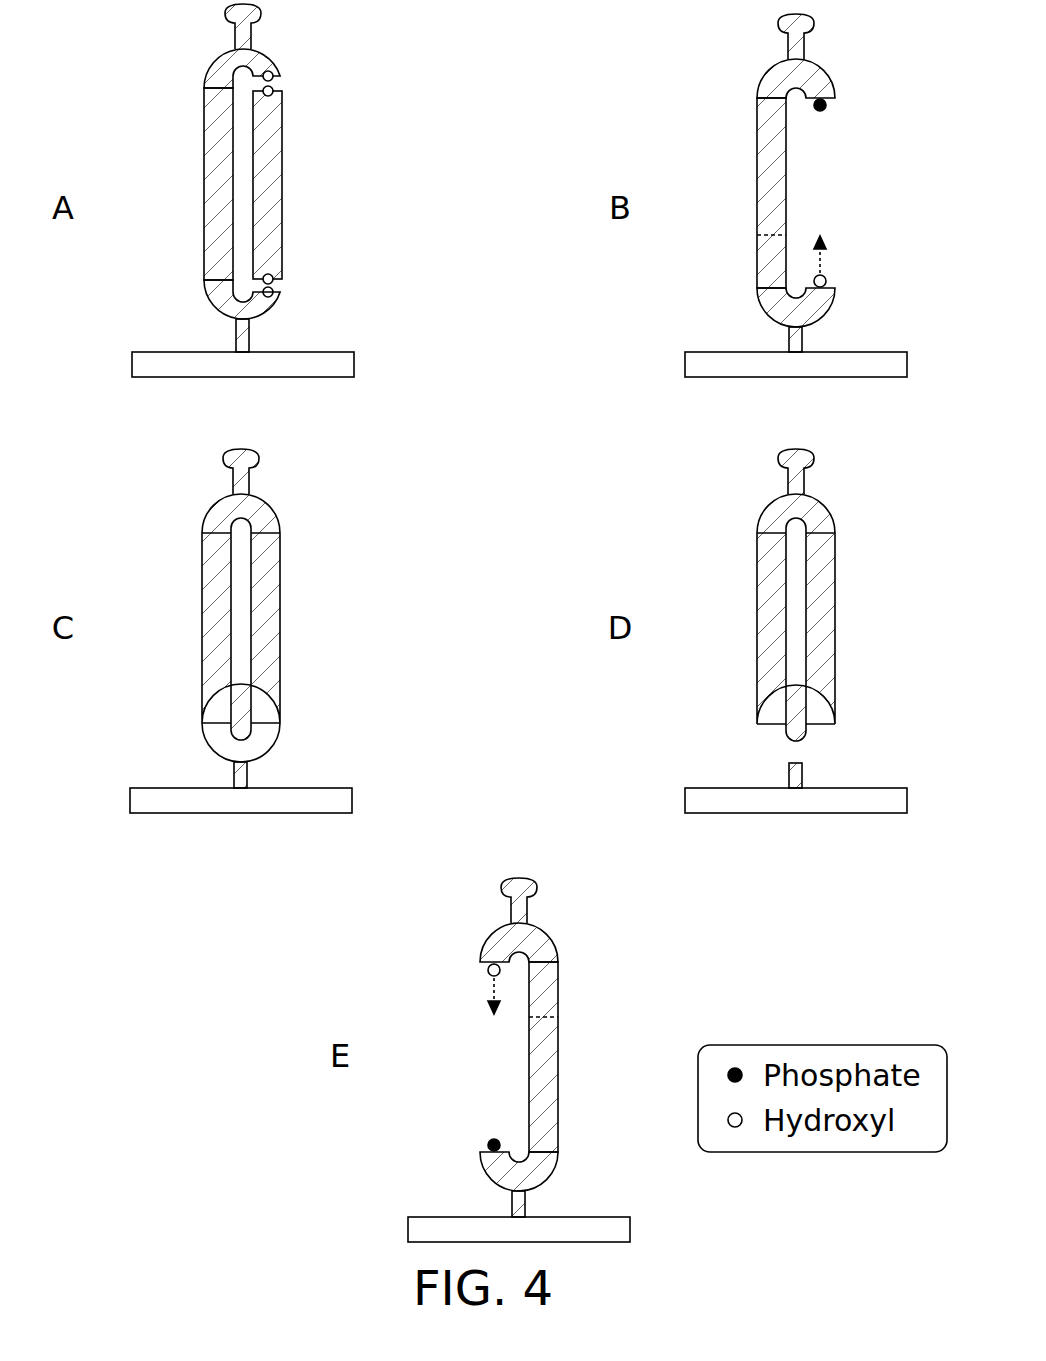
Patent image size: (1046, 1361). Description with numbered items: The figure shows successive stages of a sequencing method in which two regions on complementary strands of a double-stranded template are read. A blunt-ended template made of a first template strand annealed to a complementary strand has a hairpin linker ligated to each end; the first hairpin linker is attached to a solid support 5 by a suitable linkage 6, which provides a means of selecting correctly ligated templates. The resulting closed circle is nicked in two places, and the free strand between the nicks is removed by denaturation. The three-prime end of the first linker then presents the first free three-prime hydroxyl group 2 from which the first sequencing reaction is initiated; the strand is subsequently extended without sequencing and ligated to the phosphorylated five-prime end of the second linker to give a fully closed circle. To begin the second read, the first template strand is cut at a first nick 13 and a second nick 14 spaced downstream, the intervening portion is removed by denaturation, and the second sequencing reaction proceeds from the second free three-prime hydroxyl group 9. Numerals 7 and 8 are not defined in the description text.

The first free 3' hydroxyl group 2 is at (833, 291).
The solid support 5 is at (241, 406).
The linkage 6 is at (250, 328).
The single-stranded region 7 is at (749, 235).
The single-stranded region 8 is at (581, 962).
The second free 3' hydroxyl group 9 is at (480, 962).
The first nick 13 is at (722, 533).
The second nick 14 is at (722, 724).